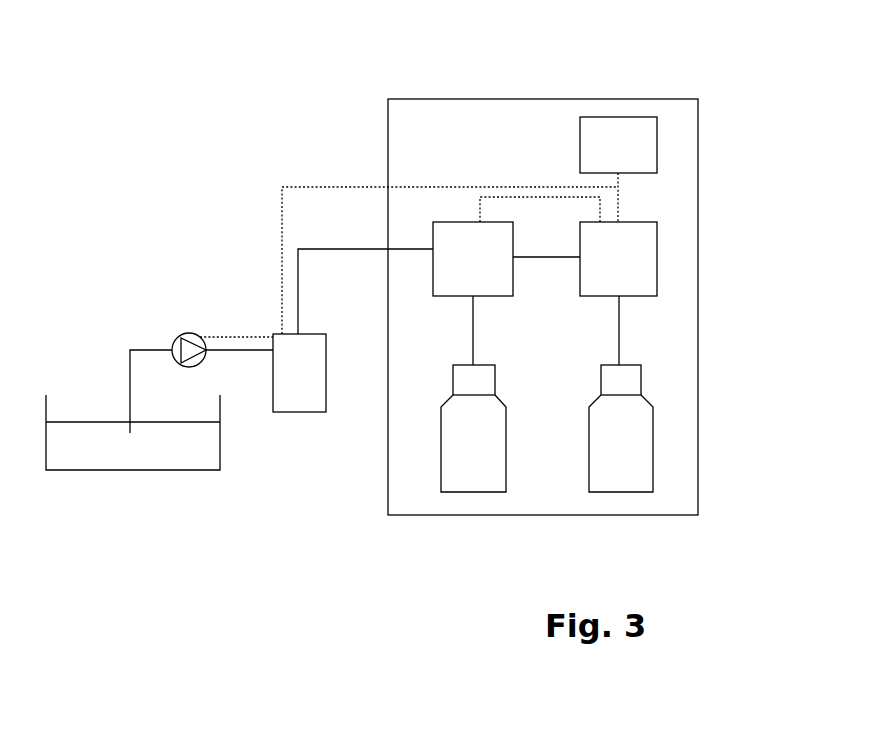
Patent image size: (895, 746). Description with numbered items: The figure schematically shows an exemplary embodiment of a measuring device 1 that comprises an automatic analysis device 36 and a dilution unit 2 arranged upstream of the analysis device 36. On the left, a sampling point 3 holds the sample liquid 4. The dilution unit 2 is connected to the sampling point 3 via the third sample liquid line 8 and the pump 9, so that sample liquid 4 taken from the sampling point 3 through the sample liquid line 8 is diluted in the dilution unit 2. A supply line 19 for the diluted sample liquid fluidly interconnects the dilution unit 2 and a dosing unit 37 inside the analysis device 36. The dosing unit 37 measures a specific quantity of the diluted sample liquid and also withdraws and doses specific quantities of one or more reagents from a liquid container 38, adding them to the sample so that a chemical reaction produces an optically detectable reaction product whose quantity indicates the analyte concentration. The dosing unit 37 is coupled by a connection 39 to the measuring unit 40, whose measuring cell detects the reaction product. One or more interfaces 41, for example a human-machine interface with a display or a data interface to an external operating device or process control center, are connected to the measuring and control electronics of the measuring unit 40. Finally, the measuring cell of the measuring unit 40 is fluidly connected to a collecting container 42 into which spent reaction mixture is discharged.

The measuring device 1 is at (158, 81).
The dilution unit 2 is at (302, 399).
The sampling point 3 is at (140, 471).
The sample liquid 4 is at (93, 453).
The third sample liquid line 8 is at (131, 383).
The pump 9 is at (185, 330).
The supply line 19 is at (327, 248).
The automatic analysis device 36 is at (590, 99).
The dosing unit 37 is at (463, 243).
The liquid container 38 is at (468, 483).
The connection line 39 is at (537, 257).
The measuring unit 40 is at (645, 265).
The interface 41 is at (652, 137).
The collecting container 42 is at (633, 483).